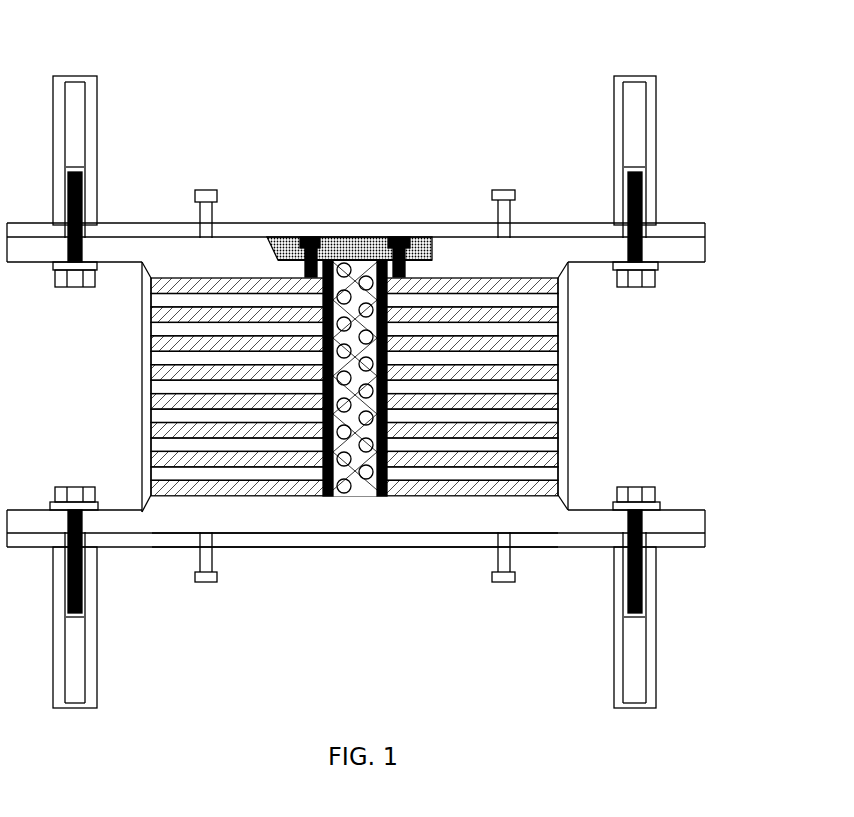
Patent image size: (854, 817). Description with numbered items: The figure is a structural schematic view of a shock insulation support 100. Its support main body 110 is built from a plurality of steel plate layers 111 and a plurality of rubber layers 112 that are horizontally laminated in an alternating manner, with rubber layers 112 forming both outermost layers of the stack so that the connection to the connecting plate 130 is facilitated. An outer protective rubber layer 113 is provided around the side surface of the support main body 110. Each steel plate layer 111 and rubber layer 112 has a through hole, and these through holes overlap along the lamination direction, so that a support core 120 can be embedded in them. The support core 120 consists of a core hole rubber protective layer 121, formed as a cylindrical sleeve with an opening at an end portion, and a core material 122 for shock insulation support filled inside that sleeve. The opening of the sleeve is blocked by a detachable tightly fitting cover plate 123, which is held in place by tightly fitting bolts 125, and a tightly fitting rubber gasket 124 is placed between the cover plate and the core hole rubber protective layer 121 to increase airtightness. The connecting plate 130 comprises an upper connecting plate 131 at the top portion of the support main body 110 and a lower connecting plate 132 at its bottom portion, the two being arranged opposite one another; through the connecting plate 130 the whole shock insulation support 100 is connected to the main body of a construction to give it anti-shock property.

The shock insulation support 100 is at (373, 128).
The support main body 110 is at (427, 387).
The steel plate layer 111 is at (470, 417).
The rubber layer 112 is at (475, 483).
The outer protective rubber layer 113 is at (148, 437).
The support core 120 is at (321, 395).
The core hole rubber protective layer 121 is at (323, 495).
The core material for shock insulation support 122 is at (373, 496).
The tightly fitting cover plate 123 is at (353, 240).
The tightly fitting rubber gasket 124 is at (278, 260).
The tightly fitting bolt 125 is at (403, 238).
The connecting plate 130 is at (115, 527).
The upper connecting plate 131 is at (527, 272).
The lower connecting plate 132 is at (495, 525).